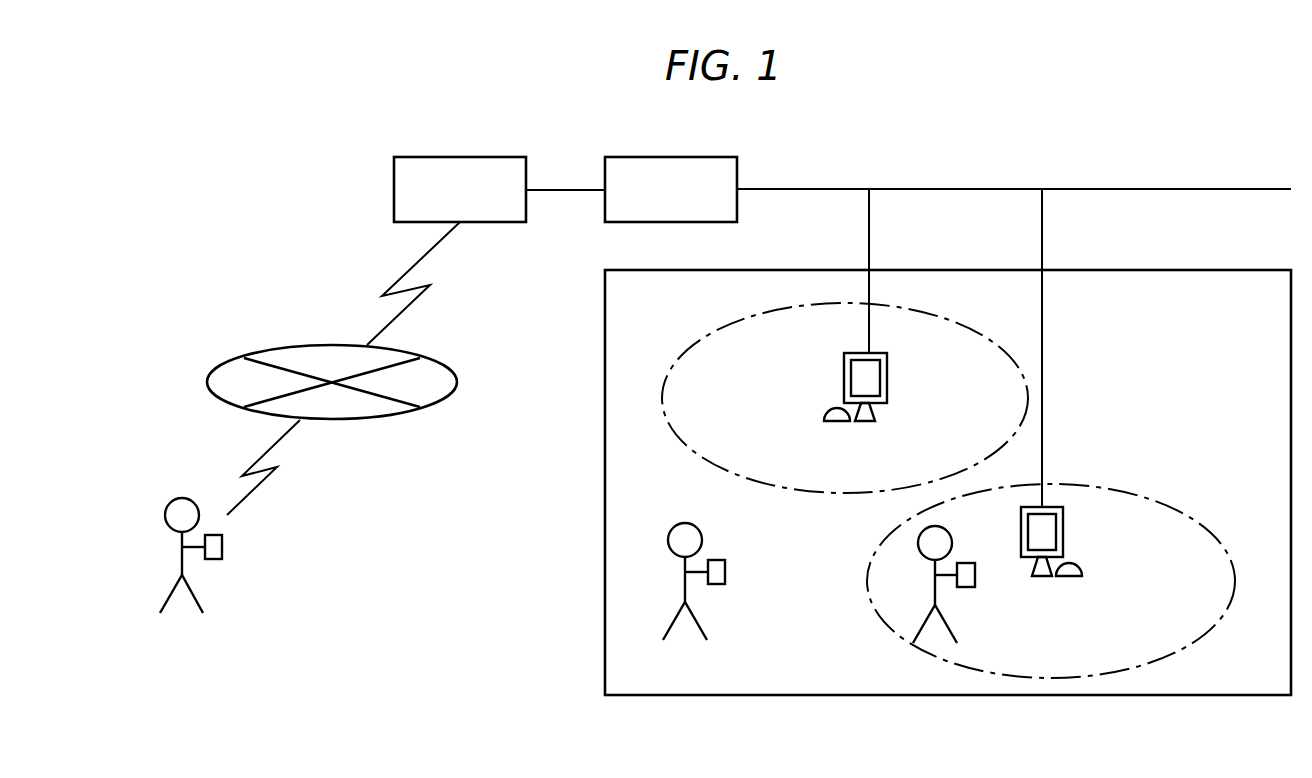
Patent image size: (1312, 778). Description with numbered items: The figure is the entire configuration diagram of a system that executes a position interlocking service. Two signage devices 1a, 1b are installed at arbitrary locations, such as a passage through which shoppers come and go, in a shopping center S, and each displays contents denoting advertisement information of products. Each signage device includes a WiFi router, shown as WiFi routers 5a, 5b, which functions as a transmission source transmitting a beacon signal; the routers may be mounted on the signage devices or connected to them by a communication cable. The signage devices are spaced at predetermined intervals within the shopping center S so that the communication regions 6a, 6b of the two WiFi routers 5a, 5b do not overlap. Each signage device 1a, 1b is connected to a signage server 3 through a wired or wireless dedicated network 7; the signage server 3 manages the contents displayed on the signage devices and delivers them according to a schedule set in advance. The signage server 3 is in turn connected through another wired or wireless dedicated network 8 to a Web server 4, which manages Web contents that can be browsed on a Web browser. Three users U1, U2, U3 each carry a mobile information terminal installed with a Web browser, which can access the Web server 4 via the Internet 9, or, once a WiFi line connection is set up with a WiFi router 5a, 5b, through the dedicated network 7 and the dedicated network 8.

The signage device 1a is at (887, 378).
The signage device 1b is at (1063, 522).
The signage server 3 is at (671, 157).
The Web server 4 is at (460, 157).
The WiFi router 5a is at (832, 408).
The WiFi router 5b is at (1082, 573).
The communication region 6a is at (722, 326).
The communication region 6b is at (1186, 513).
The dedicated network 7 is at (965, 189).
The dedicated network 8 is at (563, 190).
The Internet 9 is at (291, 345).
The shopping center S is at (1247, 270).
The user U1 is at (182, 498).
The user U2 is at (685, 523).
The user U3 is at (948, 531).